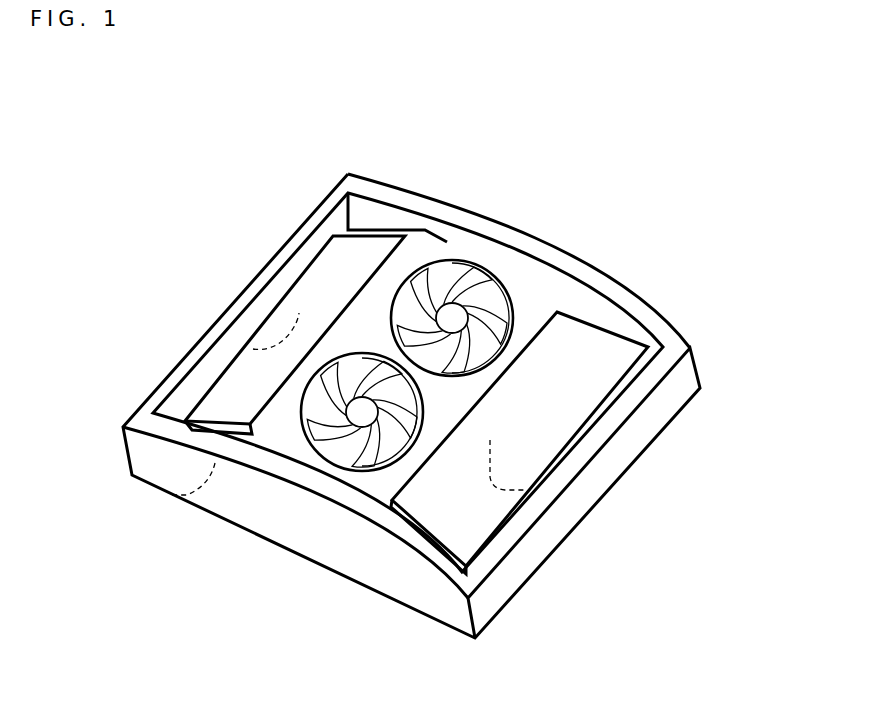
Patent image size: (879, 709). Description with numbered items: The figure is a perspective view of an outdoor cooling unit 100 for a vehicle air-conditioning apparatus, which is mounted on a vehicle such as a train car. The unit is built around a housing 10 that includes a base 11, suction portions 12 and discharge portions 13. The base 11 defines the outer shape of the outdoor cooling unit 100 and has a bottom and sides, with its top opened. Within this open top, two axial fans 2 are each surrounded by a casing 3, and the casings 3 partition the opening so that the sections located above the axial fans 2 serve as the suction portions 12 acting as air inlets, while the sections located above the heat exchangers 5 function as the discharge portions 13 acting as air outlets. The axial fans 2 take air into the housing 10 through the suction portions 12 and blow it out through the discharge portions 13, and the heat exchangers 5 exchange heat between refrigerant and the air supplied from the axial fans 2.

The outdoor cooling unit 100 is at (657, 222).
The housing 10 is at (700, 370).
The base 11 is at (185, 496).
The suction portion 12 is at (517, 340).
The discharge portion 13 is at (253, 347).
The axial fan 2 is at (455, 315).
The casing 3 is at (432, 278).
The heat exchanger 5 is at (355, 262).